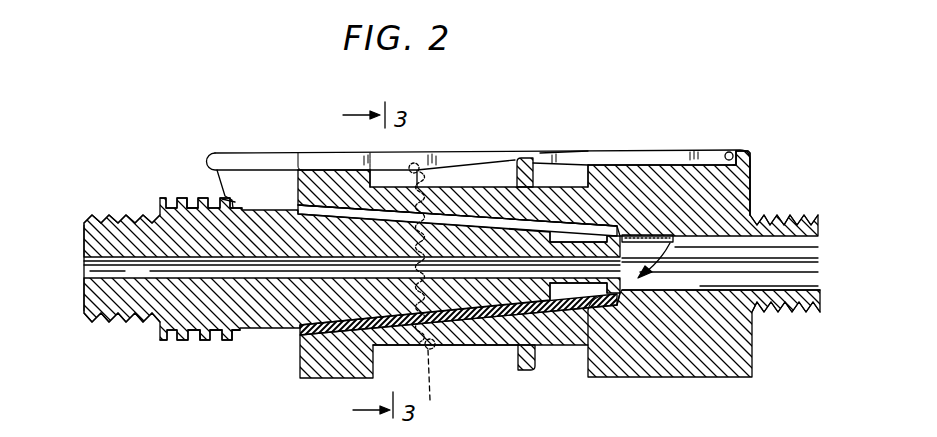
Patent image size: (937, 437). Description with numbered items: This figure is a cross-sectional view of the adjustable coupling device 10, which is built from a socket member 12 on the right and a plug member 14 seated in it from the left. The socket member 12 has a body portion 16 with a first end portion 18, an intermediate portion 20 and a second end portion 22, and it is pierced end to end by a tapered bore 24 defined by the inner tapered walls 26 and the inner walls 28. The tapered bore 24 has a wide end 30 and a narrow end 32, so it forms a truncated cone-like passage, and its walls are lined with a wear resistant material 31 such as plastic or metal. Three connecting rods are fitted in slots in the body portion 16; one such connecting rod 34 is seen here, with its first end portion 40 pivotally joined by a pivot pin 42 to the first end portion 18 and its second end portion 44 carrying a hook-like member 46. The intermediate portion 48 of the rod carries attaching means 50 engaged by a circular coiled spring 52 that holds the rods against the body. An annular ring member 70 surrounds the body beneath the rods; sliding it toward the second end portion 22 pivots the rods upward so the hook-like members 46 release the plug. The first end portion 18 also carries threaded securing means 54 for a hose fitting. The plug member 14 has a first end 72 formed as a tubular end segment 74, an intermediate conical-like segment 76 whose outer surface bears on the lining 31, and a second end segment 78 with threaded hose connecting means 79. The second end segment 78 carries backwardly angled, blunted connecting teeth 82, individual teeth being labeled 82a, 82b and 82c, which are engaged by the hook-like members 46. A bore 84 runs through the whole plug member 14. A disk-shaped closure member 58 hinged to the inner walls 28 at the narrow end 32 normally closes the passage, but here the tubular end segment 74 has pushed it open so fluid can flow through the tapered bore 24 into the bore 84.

The coupling device 10 is at (514, 89).
The socket member 12 is at (561, 123).
The plug member 14 is at (136, 188).
The body portion 16 is at (722, 182).
The first end portion 18 is at (706, 372).
The intermediate portion 20 is at (470, 346).
The second end portion 22 is at (335, 379).
The tapered bore 24 is at (580, 273).
The inner tapered walls 26 is at (563, 232).
The inner walls 28 is at (772, 300).
The wide end 30 is at (298, 337).
The wear resistant material 31 is at (470, 216).
The narrow end 32 is at (617, 303).
The connecting rod 34 is at (540, 152).
The first end portion 40 is at (713, 160).
The pivot pin 42 is at (731, 151).
The second end portion 44 is at (224, 155).
The hook-like member 46 is at (208, 163).
The intermediate portion 48 is at (428, 160).
The attaching means 50 is at (413, 165).
The spring end 52 is at (440, 381).
The securing means 54 is at (806, 214).
The closure member 58 is at (638, 233).
The annular ring member 70 is at (517, 371).
The first end 72 is at (600, 296).
The tubular end segment 74 is at (592, 280).
The intermediate conical-like segment 76 is at (323, 230).
The second end segment 78 is at (195, 330).
The hose connecting means 79 is at (84, 300).
The connecting teeth 82 is at (198, 326).
The groove 82a is at (237, 341).
The groove 82b is at (213, 341).
The groove 82c is at (200, 199).
The bore 84 is at (117, 278).